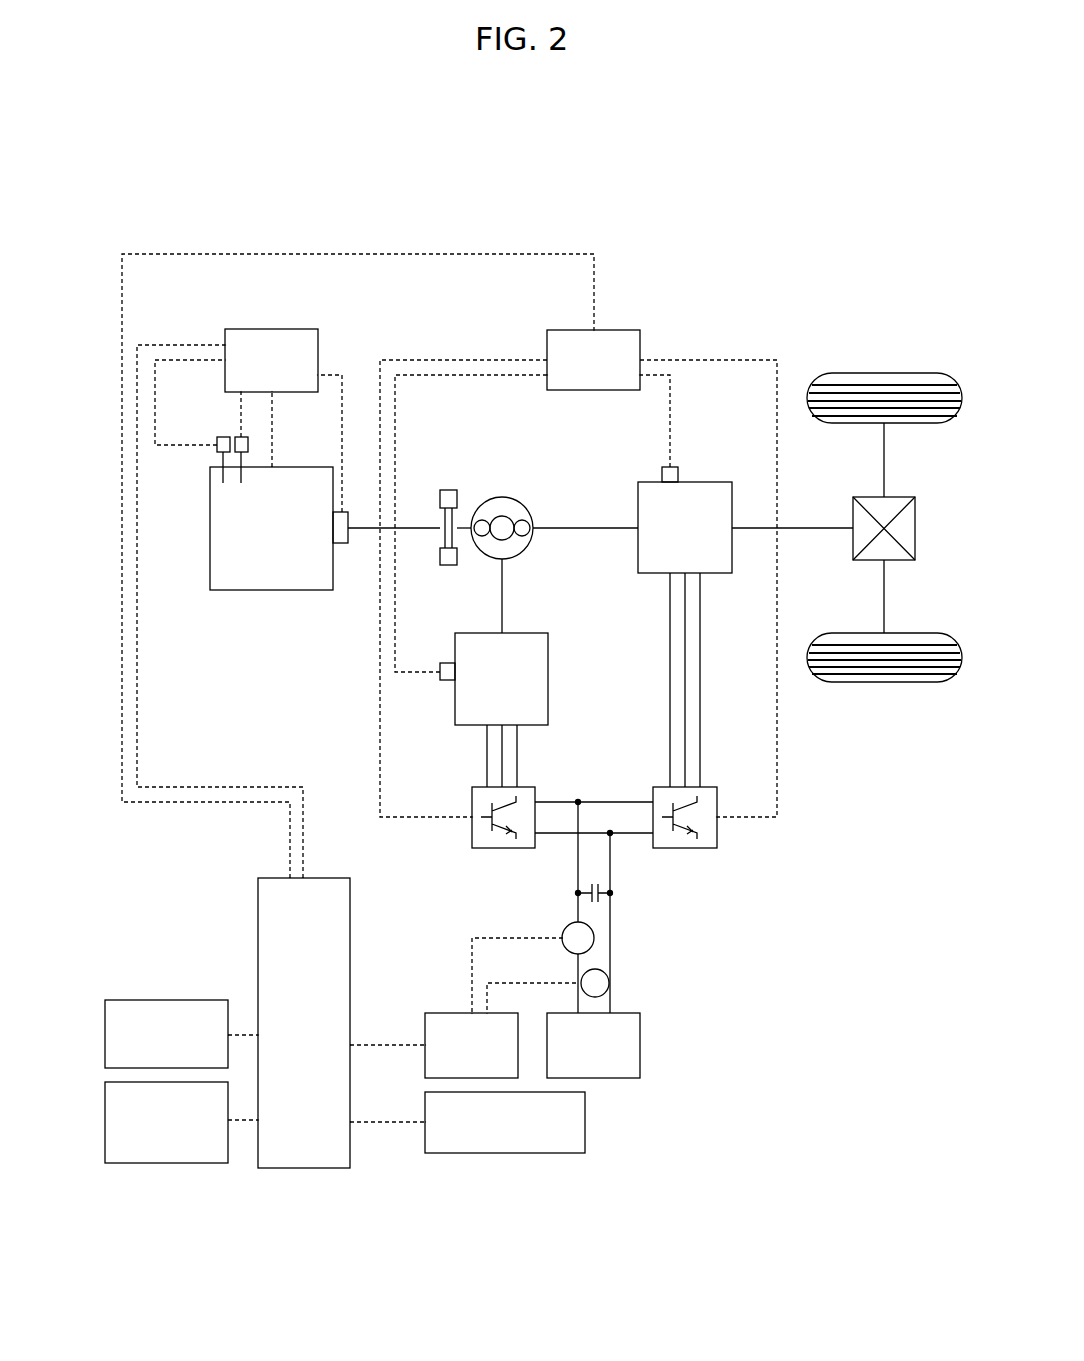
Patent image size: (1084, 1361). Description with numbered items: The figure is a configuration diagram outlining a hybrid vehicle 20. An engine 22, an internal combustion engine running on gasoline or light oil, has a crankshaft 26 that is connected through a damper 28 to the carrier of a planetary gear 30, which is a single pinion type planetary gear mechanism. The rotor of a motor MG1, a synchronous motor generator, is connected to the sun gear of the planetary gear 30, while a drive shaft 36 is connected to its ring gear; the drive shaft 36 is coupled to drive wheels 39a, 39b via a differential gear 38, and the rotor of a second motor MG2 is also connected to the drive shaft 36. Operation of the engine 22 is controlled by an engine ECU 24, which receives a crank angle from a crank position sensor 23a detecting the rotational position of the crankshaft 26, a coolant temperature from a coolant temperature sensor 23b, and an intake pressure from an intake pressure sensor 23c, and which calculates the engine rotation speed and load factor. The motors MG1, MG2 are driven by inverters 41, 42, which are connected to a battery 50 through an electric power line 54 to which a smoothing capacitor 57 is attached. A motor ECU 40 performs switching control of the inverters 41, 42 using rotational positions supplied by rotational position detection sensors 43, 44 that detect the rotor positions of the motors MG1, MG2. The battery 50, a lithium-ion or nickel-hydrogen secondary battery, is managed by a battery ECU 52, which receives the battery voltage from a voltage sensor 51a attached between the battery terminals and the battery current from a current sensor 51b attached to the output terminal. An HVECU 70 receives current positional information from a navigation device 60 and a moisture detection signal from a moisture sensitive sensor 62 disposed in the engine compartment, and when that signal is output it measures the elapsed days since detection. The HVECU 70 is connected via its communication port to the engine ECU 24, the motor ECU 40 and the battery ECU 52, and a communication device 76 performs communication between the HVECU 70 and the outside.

The hybrid vehicle 20 is at (715, 298).
The engine 22 is at (297, 465).
The crank position sensor 23a is at (341, 544).
The coolant temperature sensor 23b is at (236, 436).
The intake pressure sensor 23c is at (216, 450).
The engine ECU 24 is at (292, 327).
The crankshaft 26 is at (418, 524).
The damper 28 is at (450, 488).
The planetary gear 30 is at (504, 497).
The drive shaft 36 is at (822, 525).
The differential gear 38 is at (898, 496).
The drive wheel 39a is at (883, 372).
The drive wheel 39b is at (883, 683).
The motor ECU 40 is at (617, 328).
The inverter 41 is at (528, 786).
The inverter 42 is at (708, 786).
The rotational position detection sensor 43 is at (449, 682).
The rotational position detection sensor 44 is at (674, 465).
The battery 50 is at (642, 1045).
The voltage sensor 51a is at (610, 981).
The current sensor 51b is at (596, 936).
The battery ECU 52 is at (451, 1012).
The electric power line 54 is at (606, 866).
The smoothing capacitor 57 is at (613, 892).
The navigation device 60 is at (104, 1038).
The moisture sensitive sensor 62 is at (104, 1122).
The HVECU 70 is at (325, 877).
The communication device 76 is at (586, 1118).
The motor MG1 is at (471, 632).
The motor MG2 is at (722, 481).